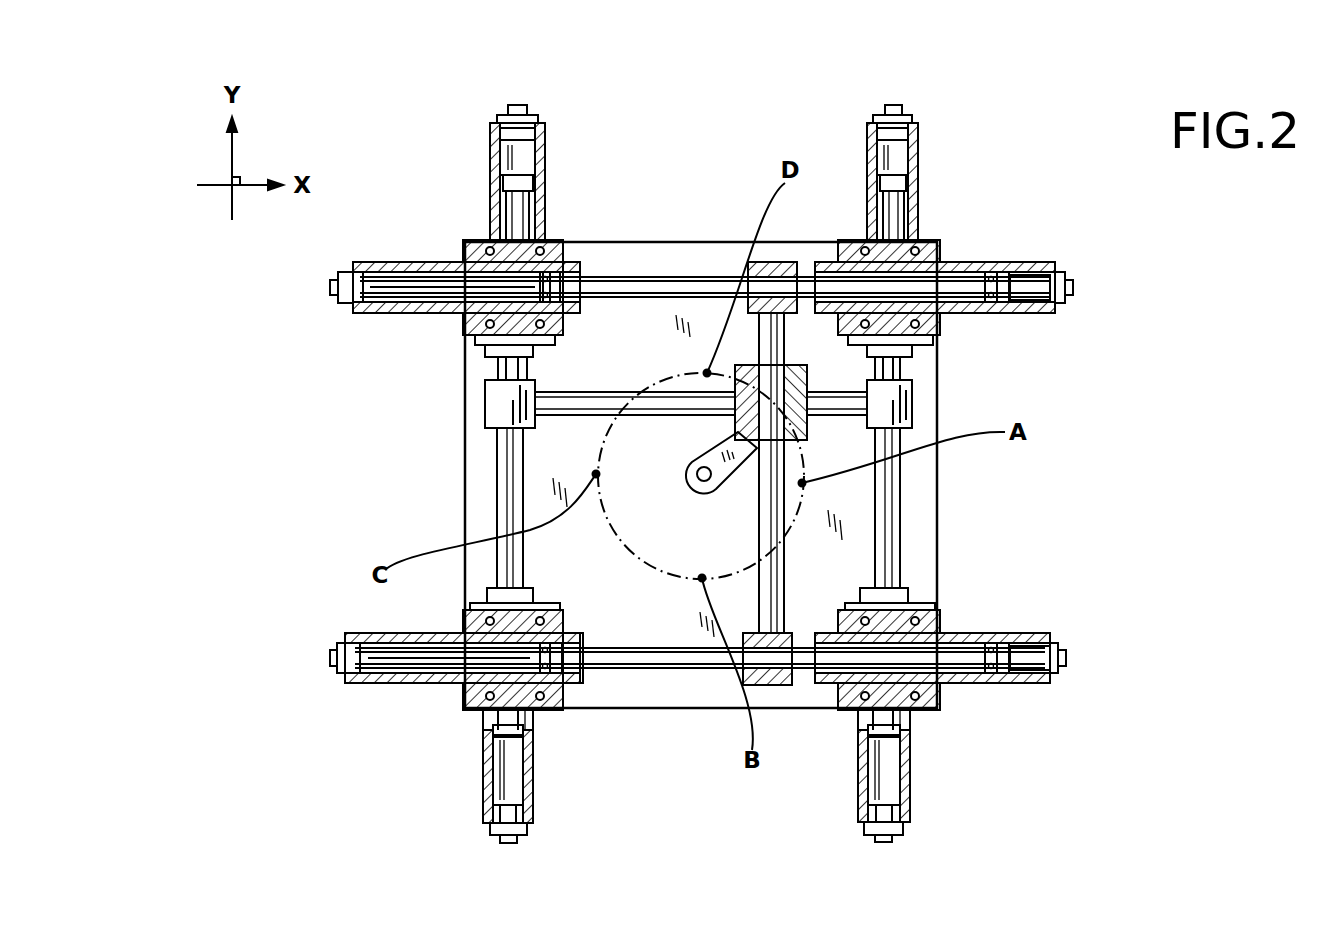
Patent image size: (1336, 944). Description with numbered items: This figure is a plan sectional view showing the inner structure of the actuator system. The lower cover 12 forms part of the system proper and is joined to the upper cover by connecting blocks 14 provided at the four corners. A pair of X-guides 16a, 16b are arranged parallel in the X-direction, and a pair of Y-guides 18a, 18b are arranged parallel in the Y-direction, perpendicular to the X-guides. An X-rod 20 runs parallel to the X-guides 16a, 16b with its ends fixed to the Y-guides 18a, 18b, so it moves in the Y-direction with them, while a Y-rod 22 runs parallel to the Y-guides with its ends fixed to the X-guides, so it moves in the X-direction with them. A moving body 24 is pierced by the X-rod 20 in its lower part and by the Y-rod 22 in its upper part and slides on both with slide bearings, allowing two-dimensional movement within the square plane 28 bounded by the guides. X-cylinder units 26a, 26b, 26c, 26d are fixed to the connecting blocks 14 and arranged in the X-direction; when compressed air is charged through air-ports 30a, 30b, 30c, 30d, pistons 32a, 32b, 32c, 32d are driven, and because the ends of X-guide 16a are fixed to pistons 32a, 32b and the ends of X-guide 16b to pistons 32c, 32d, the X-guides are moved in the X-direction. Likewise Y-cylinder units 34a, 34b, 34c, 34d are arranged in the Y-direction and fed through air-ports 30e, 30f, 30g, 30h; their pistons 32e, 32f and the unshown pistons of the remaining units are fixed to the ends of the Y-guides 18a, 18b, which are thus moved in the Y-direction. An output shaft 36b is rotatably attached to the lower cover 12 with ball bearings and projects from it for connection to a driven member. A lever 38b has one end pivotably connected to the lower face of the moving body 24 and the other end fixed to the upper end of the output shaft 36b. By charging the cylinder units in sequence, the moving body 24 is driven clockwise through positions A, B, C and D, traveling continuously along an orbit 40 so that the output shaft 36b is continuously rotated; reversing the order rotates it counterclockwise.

The lower cover 12 is at (920, 566).
The connecting blocks 14 is at (570, 242).
The X-guide 16a is at (710, 290).
The X-guide 16b is at (692, 670).
The Y-guide 18a is at (900, 490).
The Y-guide 18b is at (500, 490).
The X-rod 20 is at (590, 400).
The Y-rod 22 is at (780, 515).
The moving body 24 is at (895, 363).
The X-cylinder unit 26a is at (970, 262).
The X-cylinder unit 26b is at (375, 262).
The X-cylinder unit 26c is at (380, 683).
The X-cylinder unit 26d is at (1045, 683).
The square plane 28 is at (620, 633).
The air-port 30a is at (1075, 287).
The air-port 30b is at (340, 300).
The air-port 30c is at (335, 660).
The air-port 30d is at (1067, 652).
The air-port 30e is at (890, 105).
The air-port 30f is at (512, 105).
The air-port 30g is at (498, 835).
The air-port 30h is at (893, 840).
The piston 32a is at (1000, 318).
The piston 32b is at (540, 288).
The piston 32c is at (495, 740).
The piston 32d is at (1020, 685).
The piston 32e is at (915, 165).
The piston 32f is at (496, 160).
The Y-cylinder unit 34a is at (918, 140).
The Y-cylinder unit 34b is at (545, 150).
The Y-cylinder unit 34c is at (536, 790).
The Y-cylinder unit 34d is at (877, 745).
The output shaft 36b is at (622, 632).
The lever 38b is at (716, 444).
The orbit 40 is at (668, 373).